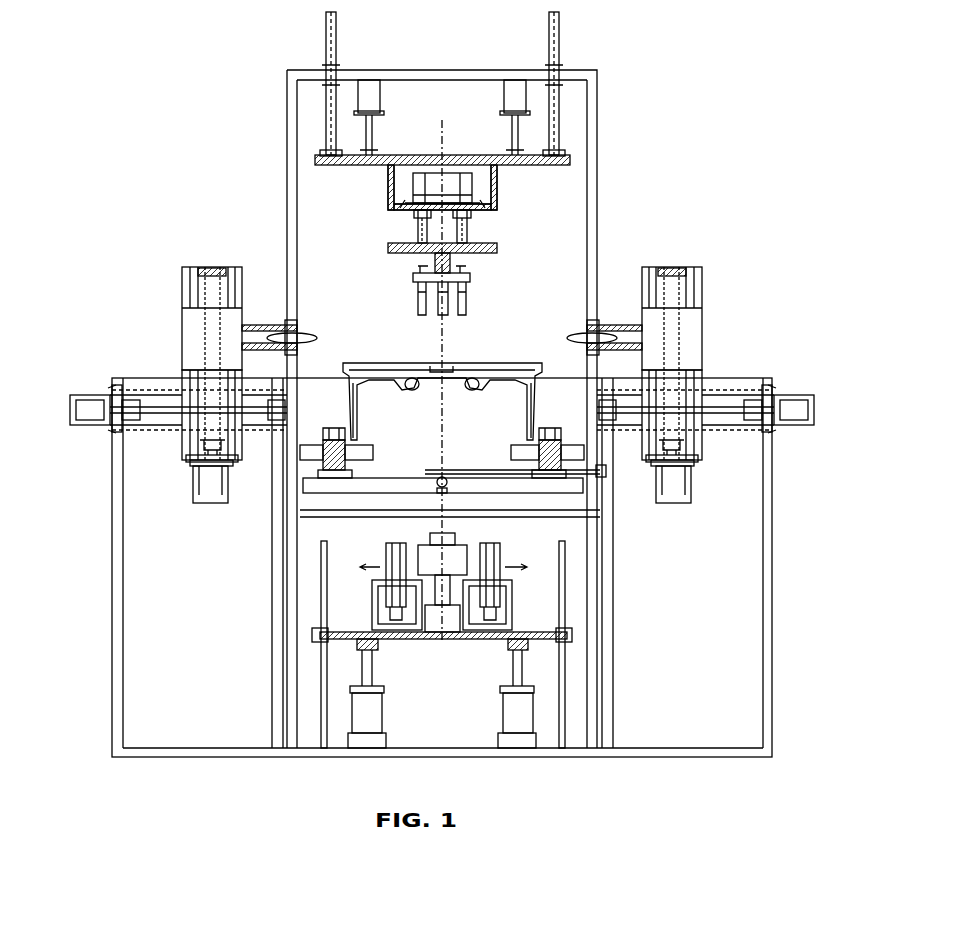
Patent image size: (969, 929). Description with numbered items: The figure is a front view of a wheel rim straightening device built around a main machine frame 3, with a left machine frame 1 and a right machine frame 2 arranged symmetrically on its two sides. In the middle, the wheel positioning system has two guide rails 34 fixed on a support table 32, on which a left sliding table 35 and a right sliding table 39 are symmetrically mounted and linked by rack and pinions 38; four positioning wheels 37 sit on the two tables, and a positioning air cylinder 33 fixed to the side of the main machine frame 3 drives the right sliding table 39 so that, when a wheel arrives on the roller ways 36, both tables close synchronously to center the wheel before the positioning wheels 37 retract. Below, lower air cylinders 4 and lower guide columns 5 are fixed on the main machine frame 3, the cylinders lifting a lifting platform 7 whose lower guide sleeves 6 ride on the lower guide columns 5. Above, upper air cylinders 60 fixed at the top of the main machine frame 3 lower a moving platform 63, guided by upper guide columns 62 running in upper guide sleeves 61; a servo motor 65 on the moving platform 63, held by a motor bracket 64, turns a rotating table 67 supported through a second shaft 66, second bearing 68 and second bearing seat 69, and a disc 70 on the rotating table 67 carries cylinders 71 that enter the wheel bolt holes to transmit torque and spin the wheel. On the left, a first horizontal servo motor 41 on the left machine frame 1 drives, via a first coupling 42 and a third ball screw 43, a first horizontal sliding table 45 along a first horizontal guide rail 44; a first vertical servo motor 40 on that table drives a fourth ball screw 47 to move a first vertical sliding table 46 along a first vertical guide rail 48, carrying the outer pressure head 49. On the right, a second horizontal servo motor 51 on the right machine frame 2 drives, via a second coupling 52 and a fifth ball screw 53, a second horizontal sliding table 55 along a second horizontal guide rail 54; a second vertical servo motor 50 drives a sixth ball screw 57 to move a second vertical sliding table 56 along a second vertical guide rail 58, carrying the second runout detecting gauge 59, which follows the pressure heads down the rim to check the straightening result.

The left machine frame 1 is at (278, 710).
The right machine frame 2 is at (607, 711).
The main machine frame 3 is at (293, 697).
The lower air cylinders 4 is at (360, 703).
The lower guide columns 5 is at (322, 658).
The lower guide sleeves 6 is at (318, 632).
The lifting platform 7 is at (350, 635).
The support table 32 is at (565, 510).
The positioning air cylinder 33 is at (600, 470).
The guide rails 34 is at (362, 488).
The left sliding table 35 is at (352, 468).
The roller ways 36 is at (358, 443).
The positioning wheels 37 is at (355, 428).
The rack and pinions 38 is at (442, 480).
The right sliding table 39 is at (530, 472).
The first vertical servo motor 40 is at (210, 495).
The first horizontal servo motor 41 is at (93, 412).
The first coupling 42 is at (110, 393).
The third ball screw 43 is at (158, 410).
The first horizontal guide rail 44 is at (165, 395).
The first horizontal sliding table 45 is at (187, 388).
The first vertical sliding table 46 is at (202, 322).
The fourth ball screw 47 is at (207, 305).
The first vertical guide rail 48 is at (182, 268).
The outer pressure head 49 is at (290, 327).
The second vertical servo motor 50 is at (678, 495).
The second horizontal servo motor 51 is at (791, 412).
The second coupling 52 is at (774, 393).
The fifth ball screw 53 is at (726, 410).
The second horizontal guide rail 54 is at (719, 395).
The second horizontal sliding table 55 is at (697, 388).
The second vertical sliding table 56 is at (682, 322).
The sixth ball screw 57 is at (705, 307).
The second vertical guide rail 58 is at (703, 268).
The second runout detecting gauge 59 is at (590, 327).
The upper air cylinders 60 is at (520, 93).
The upper guide sleeves 61 is at (327, 72).
The upper guide columns 62 is at (331, 117).
The moving platform 63 is at (466, 193).
The motor bracket 64 is at (492, 165).
The servo motor 65 is at (497, 210).
The second shaft 66 is at (480, 247).
The rotating table 67 is at (458, 232).
The second bearing 68 is at (407, 208).
The second bearing seat 69 is at (418, 235).
The disc 70 is at (418, 280).
The cylinders 71 is at (420, 302).